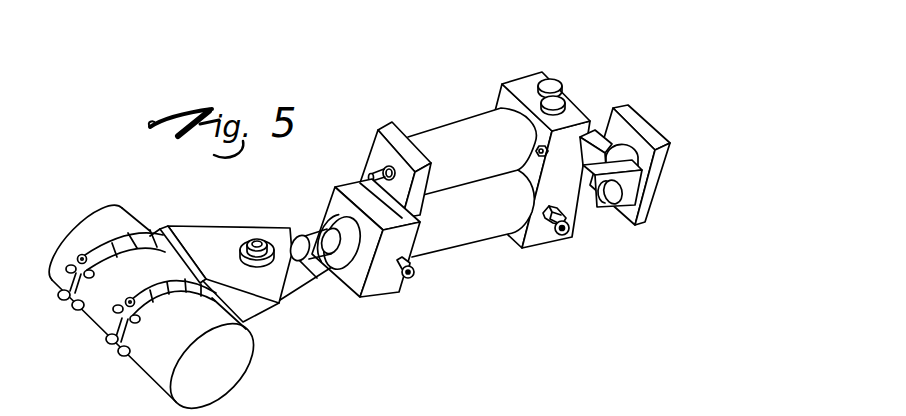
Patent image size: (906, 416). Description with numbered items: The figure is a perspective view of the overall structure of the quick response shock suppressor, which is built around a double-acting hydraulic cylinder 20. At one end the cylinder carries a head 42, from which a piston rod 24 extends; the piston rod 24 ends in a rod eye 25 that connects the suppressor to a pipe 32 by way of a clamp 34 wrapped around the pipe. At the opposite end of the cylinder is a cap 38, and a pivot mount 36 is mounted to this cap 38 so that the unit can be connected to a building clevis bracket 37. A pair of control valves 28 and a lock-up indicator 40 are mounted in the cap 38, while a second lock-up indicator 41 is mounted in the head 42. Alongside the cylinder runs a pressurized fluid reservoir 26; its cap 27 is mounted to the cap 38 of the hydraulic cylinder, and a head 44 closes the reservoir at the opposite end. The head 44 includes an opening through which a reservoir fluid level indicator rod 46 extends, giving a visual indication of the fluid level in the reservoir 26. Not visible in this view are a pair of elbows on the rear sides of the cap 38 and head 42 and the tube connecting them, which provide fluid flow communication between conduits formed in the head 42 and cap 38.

The double-acting hydraulic cylinder 20 is at (467, 245).
The piston rod 24 is at (311, 232).
The rod eye 25 is at (262, 228).
The pressurized fluid reservoir 26 is at (465, 120).
The cap 27 is at (507, 84).
The control valves 28 is at (564, 101).
The pipe 32 is at (148, 376).
The clamp 34 is at (255, 306).
The pivot mount 36 is at (590, 220).
The building clevis bracket 37 is at (655, 132).
The cap 38 is at (533, 250).
The lock-up indicator 40 is at (561, 238).
The second lock-up indicator 41 is at (414, 279).
The head 42 is at (381, 296).
The head 44 is at (383, 126).
The reservoir fluid level indicator rod 46 is at (369, 176).